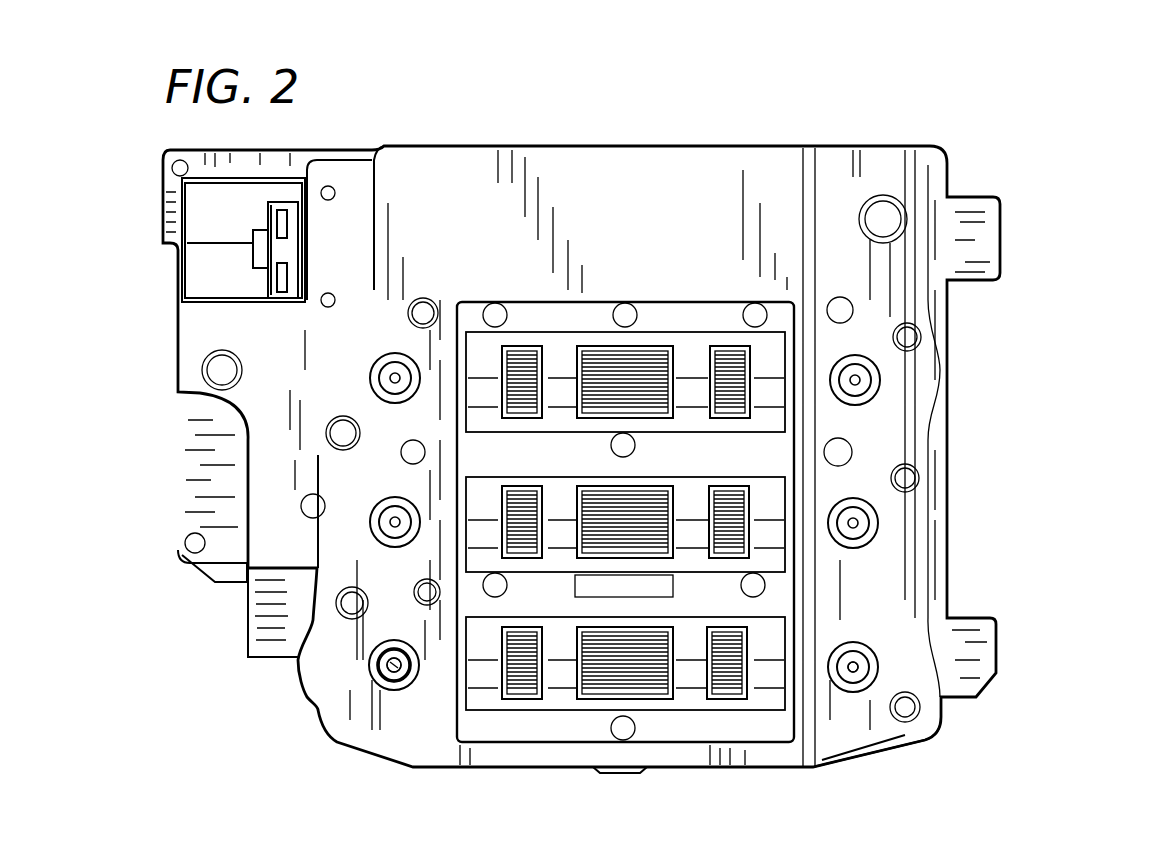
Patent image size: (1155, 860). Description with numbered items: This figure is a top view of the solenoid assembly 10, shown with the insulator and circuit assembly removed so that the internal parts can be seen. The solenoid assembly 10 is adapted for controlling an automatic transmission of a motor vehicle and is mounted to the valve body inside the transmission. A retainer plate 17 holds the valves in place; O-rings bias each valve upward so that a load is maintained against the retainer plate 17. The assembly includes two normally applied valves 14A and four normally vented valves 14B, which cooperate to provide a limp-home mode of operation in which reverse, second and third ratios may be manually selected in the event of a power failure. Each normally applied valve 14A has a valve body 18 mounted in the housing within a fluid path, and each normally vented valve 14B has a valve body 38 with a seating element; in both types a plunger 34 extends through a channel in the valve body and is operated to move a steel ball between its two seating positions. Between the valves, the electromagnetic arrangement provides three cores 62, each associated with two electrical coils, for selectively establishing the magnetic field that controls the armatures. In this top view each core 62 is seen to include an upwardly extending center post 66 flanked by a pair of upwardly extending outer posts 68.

The solenoid assembly 10 is at (1065, 80).
The retainer plate 17 is at (880, 218).
The normally applied valve 14A is at (887, 520).
The normally vented valve 14B is at (368, 370).
The valve body 18 is at (910, 742).
The plunger 34 is at (393, 670).
The valve body 38 is at (406, 675).
The core 62 is at (661, 333).
The center post 66 is at (603, 352).
The outer post 68 is at (526, 352).